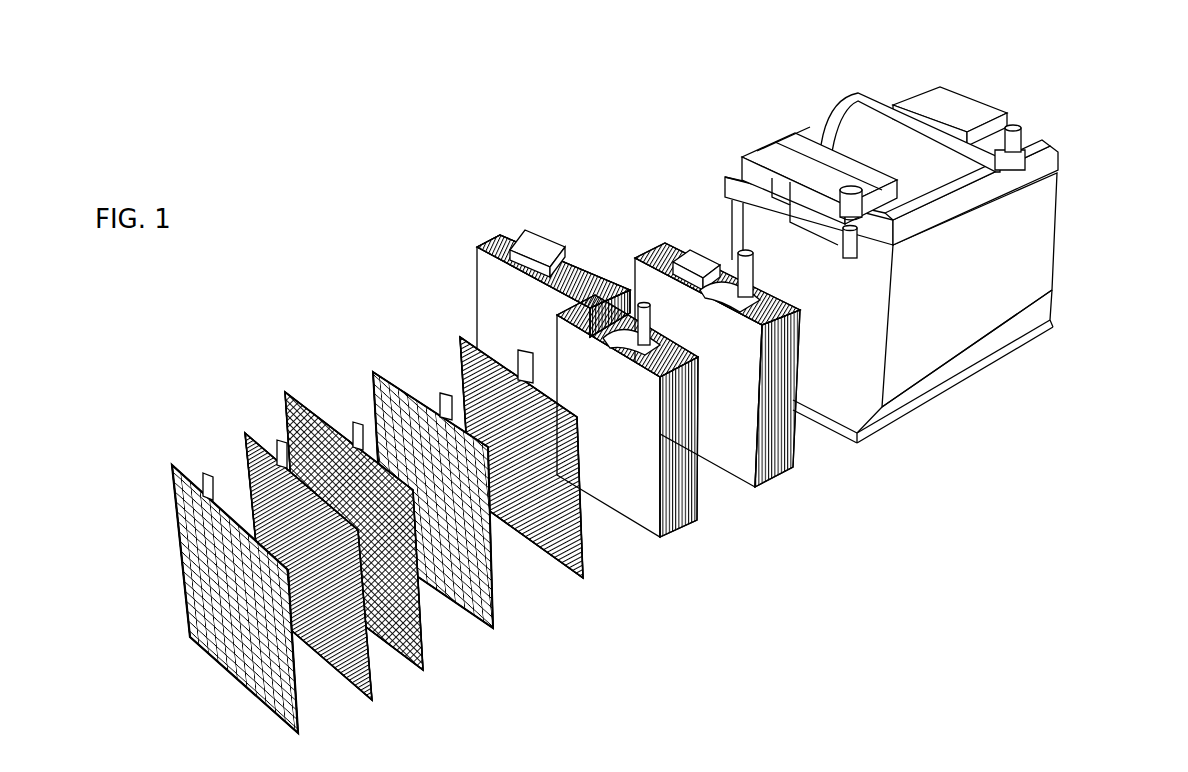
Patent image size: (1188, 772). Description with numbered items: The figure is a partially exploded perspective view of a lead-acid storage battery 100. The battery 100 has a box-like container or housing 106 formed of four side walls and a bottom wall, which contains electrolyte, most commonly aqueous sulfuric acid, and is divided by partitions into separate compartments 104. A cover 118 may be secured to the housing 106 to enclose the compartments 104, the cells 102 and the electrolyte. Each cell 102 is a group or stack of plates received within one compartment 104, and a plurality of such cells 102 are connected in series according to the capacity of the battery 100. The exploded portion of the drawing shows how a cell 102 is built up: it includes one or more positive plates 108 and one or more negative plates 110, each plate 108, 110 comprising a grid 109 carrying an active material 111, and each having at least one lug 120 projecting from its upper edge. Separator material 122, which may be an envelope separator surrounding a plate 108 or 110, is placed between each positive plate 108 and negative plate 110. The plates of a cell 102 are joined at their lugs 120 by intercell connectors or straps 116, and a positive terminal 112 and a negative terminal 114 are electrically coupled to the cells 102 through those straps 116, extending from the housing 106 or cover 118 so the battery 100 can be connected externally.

The lead-acid storage battery 100 is at (578, 138).
The cell 102 is at (773, 467).
The compartment 104 is at (880, 237).
The housing 106 is at (947, 330).
The positive plate 108 is at (655, 520).
The grid 109 is at (227, 660).
The negative plate 110 is at (480, 295).
The active material 111 is at (324, 668).
The positive terminal 112 is at (792, 156).
The negative terminal 114 is at (1012, 122).
The intercell connector or strap 116 is at (620, 333).
The cover 118 is at (1057, 152).
The lug 120 is at (205, 475).
The separator 122 is at (282, 394).